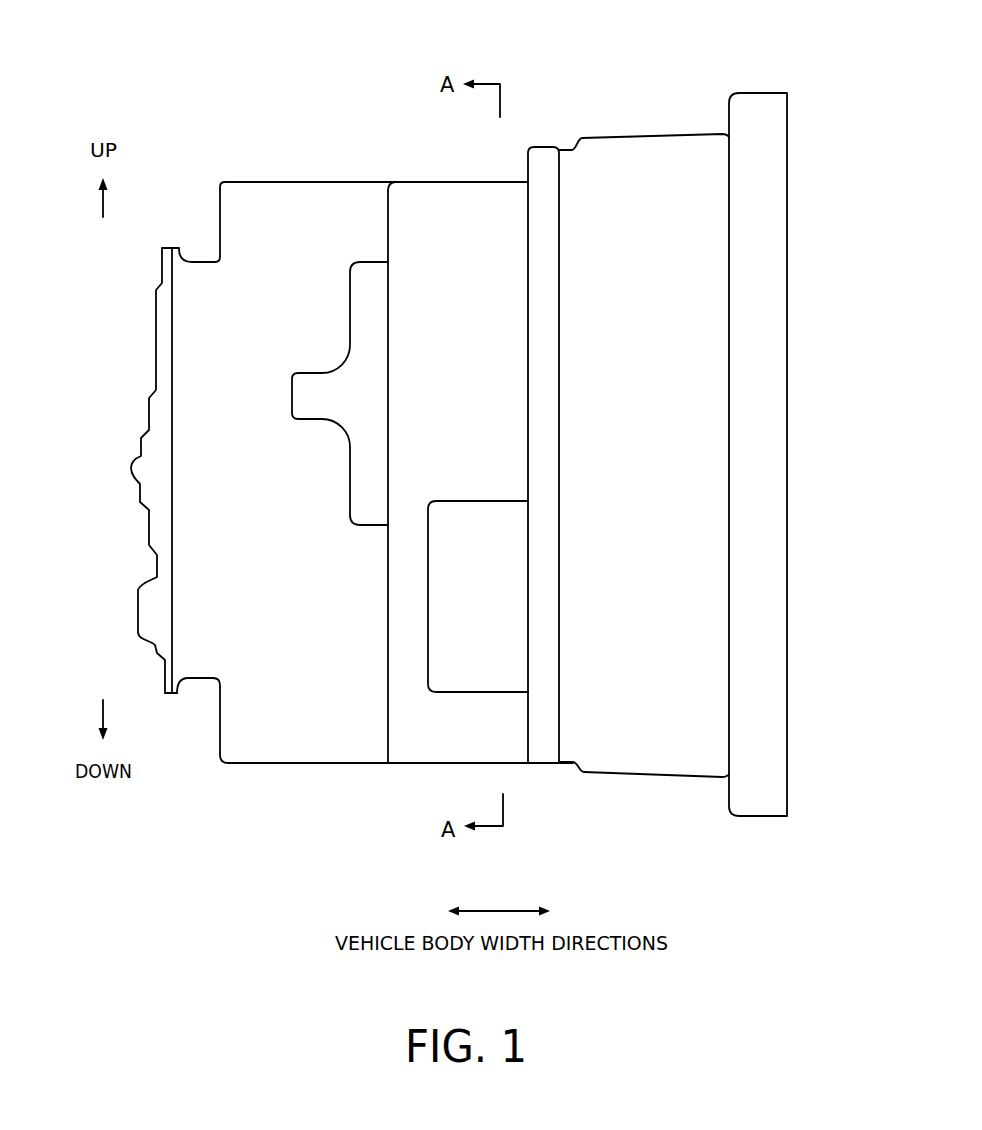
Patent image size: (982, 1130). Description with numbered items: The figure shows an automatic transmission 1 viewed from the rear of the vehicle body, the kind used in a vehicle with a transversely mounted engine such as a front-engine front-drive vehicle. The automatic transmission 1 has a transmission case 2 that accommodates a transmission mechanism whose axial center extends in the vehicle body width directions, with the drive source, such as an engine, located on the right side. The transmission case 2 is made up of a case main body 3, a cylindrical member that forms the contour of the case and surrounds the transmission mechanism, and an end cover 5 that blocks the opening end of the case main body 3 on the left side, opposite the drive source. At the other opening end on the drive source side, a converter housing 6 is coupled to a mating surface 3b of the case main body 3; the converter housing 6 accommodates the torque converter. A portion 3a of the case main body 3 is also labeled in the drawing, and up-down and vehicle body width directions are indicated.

The automatic transmission 1 is at (742, 50).
The transmission case 2 is at (672, 113).
The case main body 3 is at (443, 170).
The bracket upper portion 3a is at (333, 188).
The mating surface 3b is at (563, 410).
The end cover 5 is at (162, 332).
The converter housing 6 is at (603, 152).